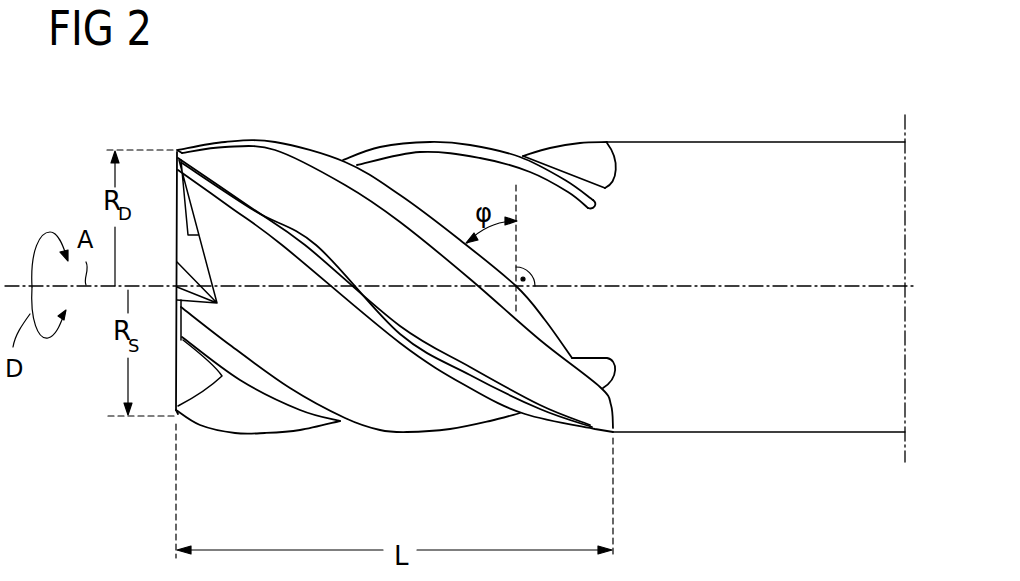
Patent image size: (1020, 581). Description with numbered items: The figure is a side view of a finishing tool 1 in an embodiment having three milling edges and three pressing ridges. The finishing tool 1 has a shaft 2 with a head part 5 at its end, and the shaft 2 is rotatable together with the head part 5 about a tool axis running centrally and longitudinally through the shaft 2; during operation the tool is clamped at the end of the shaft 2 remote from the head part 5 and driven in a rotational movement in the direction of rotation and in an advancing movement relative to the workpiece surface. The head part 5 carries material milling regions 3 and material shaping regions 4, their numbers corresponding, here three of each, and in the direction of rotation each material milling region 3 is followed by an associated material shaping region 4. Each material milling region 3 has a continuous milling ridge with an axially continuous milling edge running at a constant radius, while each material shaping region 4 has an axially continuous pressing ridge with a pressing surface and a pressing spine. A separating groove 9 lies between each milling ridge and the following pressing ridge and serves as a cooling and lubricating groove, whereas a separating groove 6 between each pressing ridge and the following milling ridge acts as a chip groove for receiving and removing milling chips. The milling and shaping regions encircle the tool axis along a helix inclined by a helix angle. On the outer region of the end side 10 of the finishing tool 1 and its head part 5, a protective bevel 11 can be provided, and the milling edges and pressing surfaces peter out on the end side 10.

The finishing tool 1 is at (699, 96).
The shaft 2 is at (830, 207).
The material milling region 3 is at (263, 147).
The material shaping region 4 is at (179, 149).
The head part 5 is at (432, 125).
The separating groove 6 is at (405, 168).
The separating groove 9 is at (322, 207).
The end side 10 is at (175, 376).
The protective bevel 11 is at (175, 152).